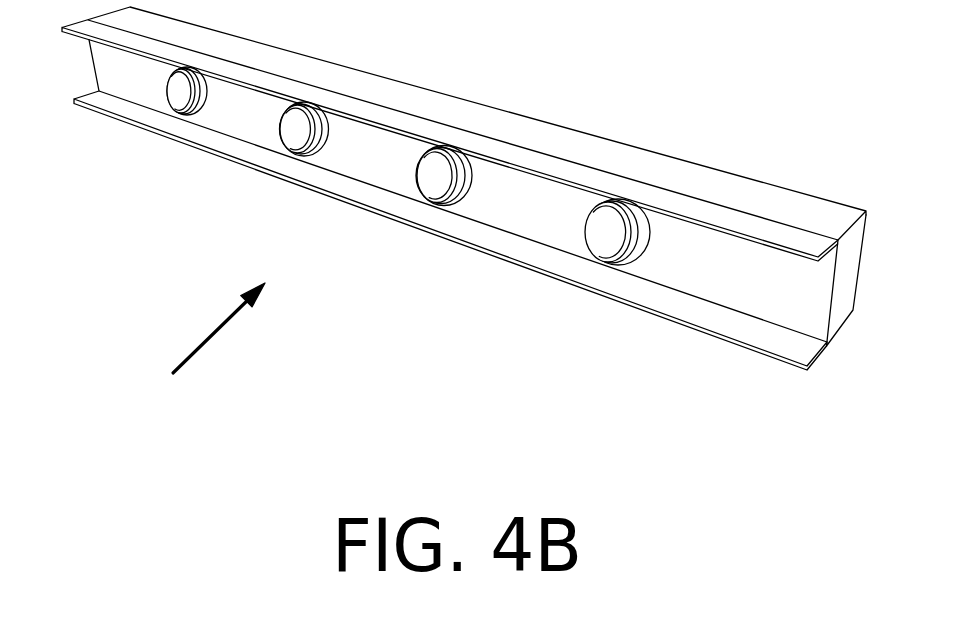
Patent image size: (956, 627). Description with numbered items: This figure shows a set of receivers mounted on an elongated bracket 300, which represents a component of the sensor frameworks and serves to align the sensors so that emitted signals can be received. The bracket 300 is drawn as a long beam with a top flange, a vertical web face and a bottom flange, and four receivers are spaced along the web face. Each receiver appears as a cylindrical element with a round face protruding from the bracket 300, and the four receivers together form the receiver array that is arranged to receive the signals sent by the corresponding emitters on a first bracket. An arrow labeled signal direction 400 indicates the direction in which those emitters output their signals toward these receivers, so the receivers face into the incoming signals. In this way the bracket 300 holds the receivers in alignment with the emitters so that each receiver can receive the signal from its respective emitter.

The bracket 300 is at (540, 65).
The signal direction 400 is at (256, 346).